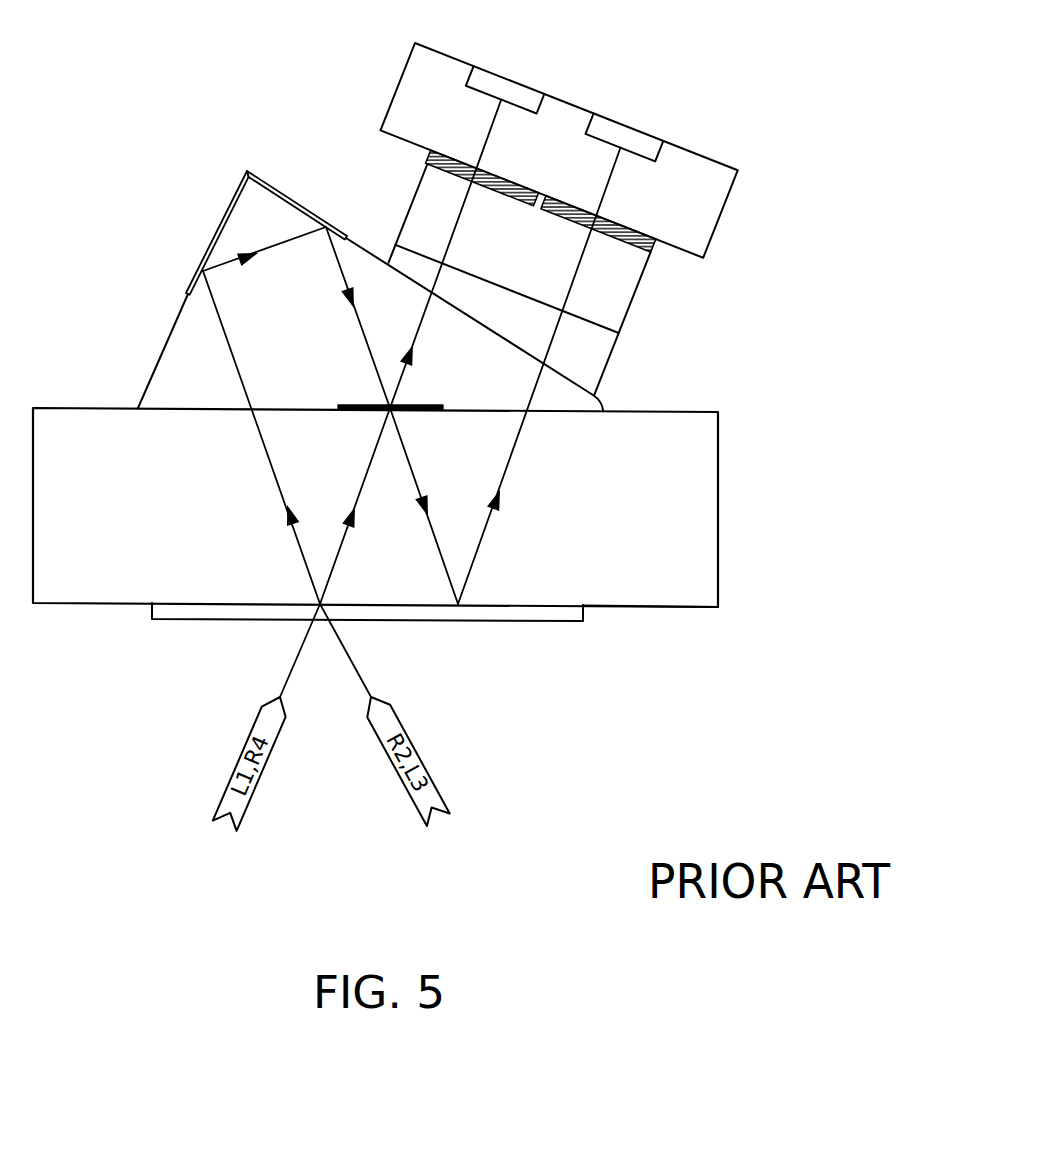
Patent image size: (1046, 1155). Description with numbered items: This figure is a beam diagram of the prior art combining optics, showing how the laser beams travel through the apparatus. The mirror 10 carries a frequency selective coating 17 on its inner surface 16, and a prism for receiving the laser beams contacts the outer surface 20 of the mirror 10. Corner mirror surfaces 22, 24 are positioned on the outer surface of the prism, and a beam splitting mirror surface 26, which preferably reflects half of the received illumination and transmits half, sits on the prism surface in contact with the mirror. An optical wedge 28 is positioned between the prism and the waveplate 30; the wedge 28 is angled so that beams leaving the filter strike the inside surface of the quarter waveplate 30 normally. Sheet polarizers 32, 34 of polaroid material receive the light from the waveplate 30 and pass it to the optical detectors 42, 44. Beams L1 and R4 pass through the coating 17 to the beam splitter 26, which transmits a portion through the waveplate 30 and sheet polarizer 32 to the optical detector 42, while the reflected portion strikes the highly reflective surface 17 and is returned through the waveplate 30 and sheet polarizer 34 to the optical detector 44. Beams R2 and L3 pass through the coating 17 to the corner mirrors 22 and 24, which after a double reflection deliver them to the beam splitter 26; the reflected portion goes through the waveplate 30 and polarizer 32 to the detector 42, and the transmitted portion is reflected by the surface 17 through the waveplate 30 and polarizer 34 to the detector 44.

The mirror 10 is at (423, 525).
The inner surface 16 is at (657, 608).
The frequency selective coating 17 is at (490, 612).
The outer surface 20 is at (697, 412).
The mirror surface 22 is at (220, 221).
The mirror surface 24 is at (283, 194).
The beam splitting mirror surface 26 is at (423, 405).
The optical wedge 28 is at (588, 357).
The waveplate 30 is at (622, 287).
The sheet polarizer 32 is at (512, 187).
The sheet polarizer 34 is at (630, 233).
The optical detector 42 is at (525, 95).
The optical detector 44 is at (640, 143).